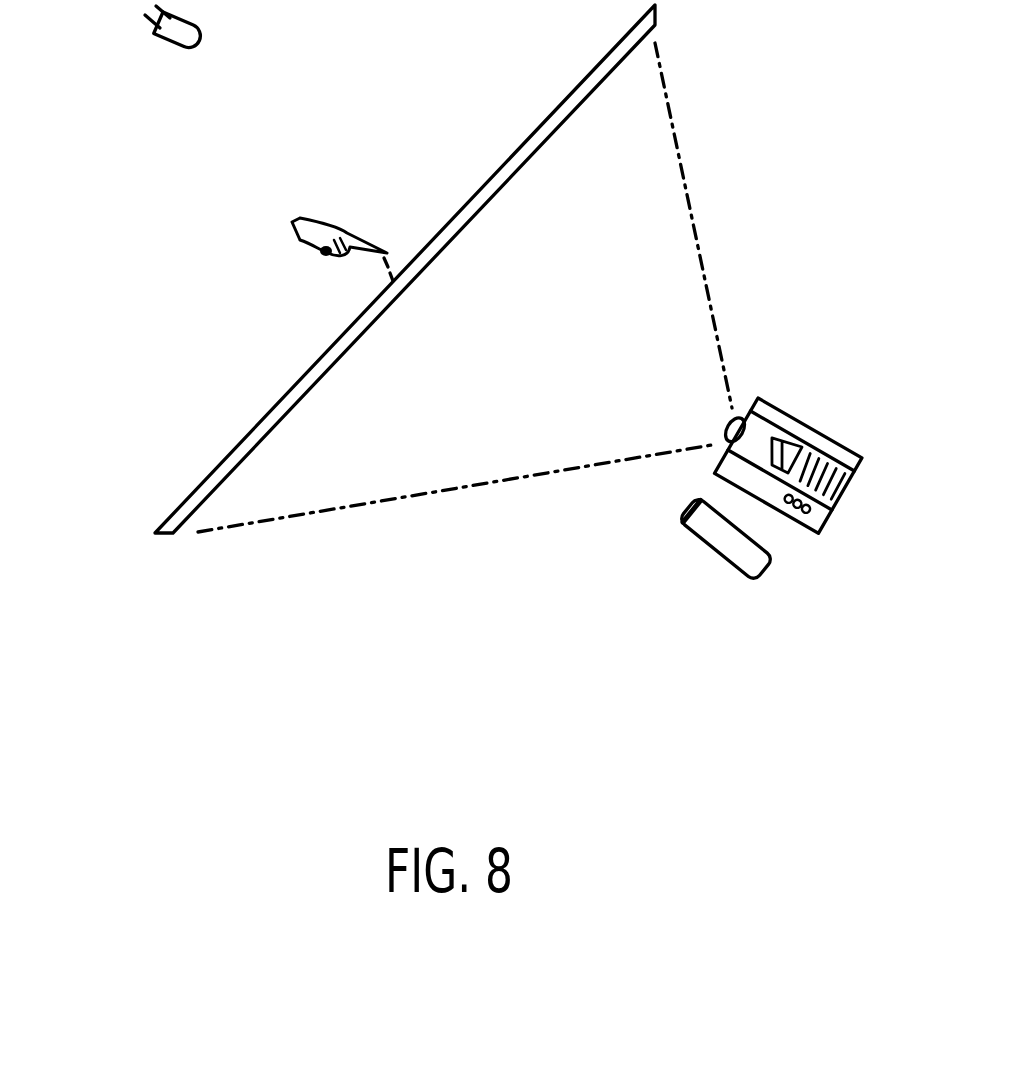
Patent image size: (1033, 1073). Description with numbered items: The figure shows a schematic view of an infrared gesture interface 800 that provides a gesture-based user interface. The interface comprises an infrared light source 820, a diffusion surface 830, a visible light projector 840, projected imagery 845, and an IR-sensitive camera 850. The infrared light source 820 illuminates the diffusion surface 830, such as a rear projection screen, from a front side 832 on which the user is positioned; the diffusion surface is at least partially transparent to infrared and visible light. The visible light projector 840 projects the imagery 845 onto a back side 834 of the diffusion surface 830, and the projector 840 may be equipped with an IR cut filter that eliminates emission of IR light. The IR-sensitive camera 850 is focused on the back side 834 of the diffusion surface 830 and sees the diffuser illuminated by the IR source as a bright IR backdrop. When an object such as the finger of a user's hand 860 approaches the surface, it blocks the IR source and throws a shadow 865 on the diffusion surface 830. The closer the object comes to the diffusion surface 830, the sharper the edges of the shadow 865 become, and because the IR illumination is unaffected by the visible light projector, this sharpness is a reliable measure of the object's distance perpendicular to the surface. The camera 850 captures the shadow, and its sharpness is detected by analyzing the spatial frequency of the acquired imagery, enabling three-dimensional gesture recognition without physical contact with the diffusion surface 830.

The infrared gesture interface 800 is at (278, 646).
The infrared light source 820 is at (165, 42).
The diffusion surface 830 is at (575, 87).
The front side 832 is at (214, 420).
The back side 834 is at (332, 520).
The visible light projector 840 is at (805, 420).
The projected imagery 845 is at (682, 165).
The IR-sensitive camera 850 is at (712, 552).
The user's hand 860 is at (328, 252).
The shadow 865 is at (397, 259).